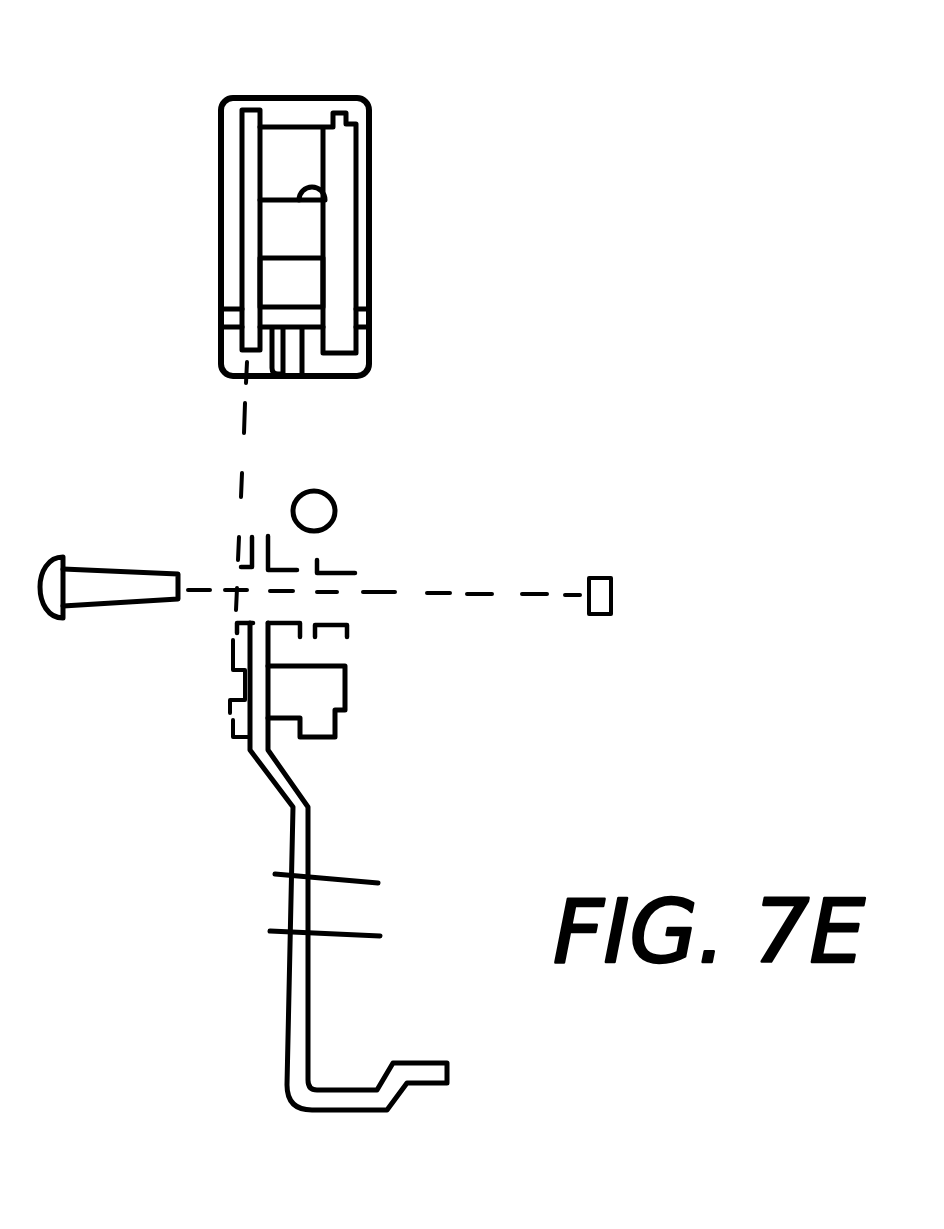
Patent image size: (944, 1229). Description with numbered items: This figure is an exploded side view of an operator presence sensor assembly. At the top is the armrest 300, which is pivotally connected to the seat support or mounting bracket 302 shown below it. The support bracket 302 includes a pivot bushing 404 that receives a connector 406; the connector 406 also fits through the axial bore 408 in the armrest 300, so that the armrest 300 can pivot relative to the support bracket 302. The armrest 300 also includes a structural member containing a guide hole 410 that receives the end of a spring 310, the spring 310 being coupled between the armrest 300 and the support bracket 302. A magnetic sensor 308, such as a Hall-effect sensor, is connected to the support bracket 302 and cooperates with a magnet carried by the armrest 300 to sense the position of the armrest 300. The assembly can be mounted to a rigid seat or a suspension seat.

The armrest 300 is at (372, 215).
The guide hole 410 is at (307, 176).
The axial bore 408 is at (299, 381).
The spring 310 is at (334, 497).
The connector 406 is at (127, 610).
The pivot bushing 404 is at (346, 628).
The magnetic sensor 308 is at (318, 740).
The support bracket 302 is at (287, 980).